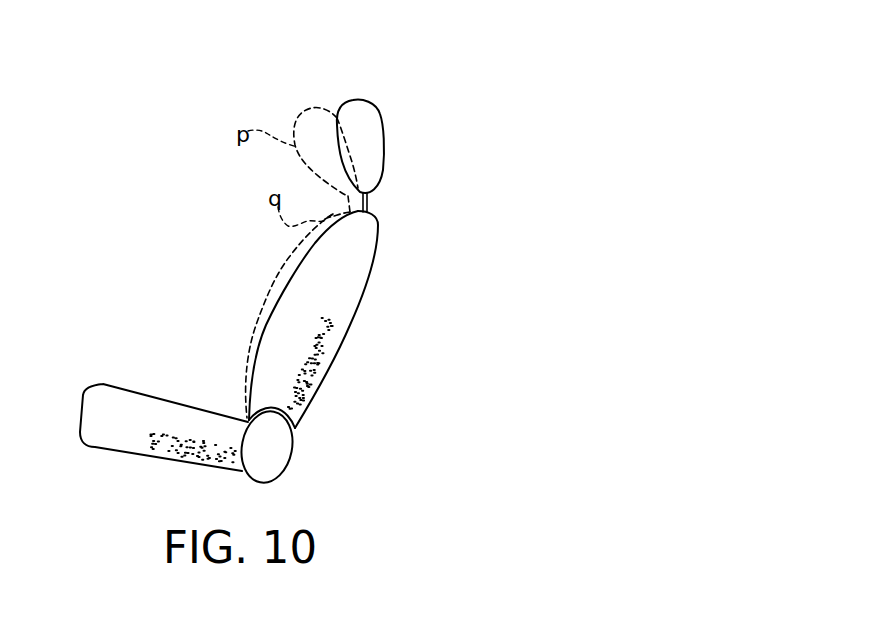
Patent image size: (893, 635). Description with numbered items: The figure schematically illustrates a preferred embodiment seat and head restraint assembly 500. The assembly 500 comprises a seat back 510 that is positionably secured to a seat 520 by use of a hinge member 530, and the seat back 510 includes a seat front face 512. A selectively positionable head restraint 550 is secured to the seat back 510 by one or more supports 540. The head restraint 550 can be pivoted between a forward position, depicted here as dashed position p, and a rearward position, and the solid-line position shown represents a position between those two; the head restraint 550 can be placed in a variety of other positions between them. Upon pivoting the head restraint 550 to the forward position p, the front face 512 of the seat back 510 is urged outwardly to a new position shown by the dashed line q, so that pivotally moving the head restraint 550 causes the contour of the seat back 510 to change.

The seat and head restraint assembly 500 is at (528, 91).
The seat back 510 is at (335, 295).
The seat front face 512 is at (260, 327).
The seat 520 is at (113, 438).
The hinge member 530 is at (273, 450).
The supports 540 is at (371, 203).
The head restraint 550 is at (377, 138).